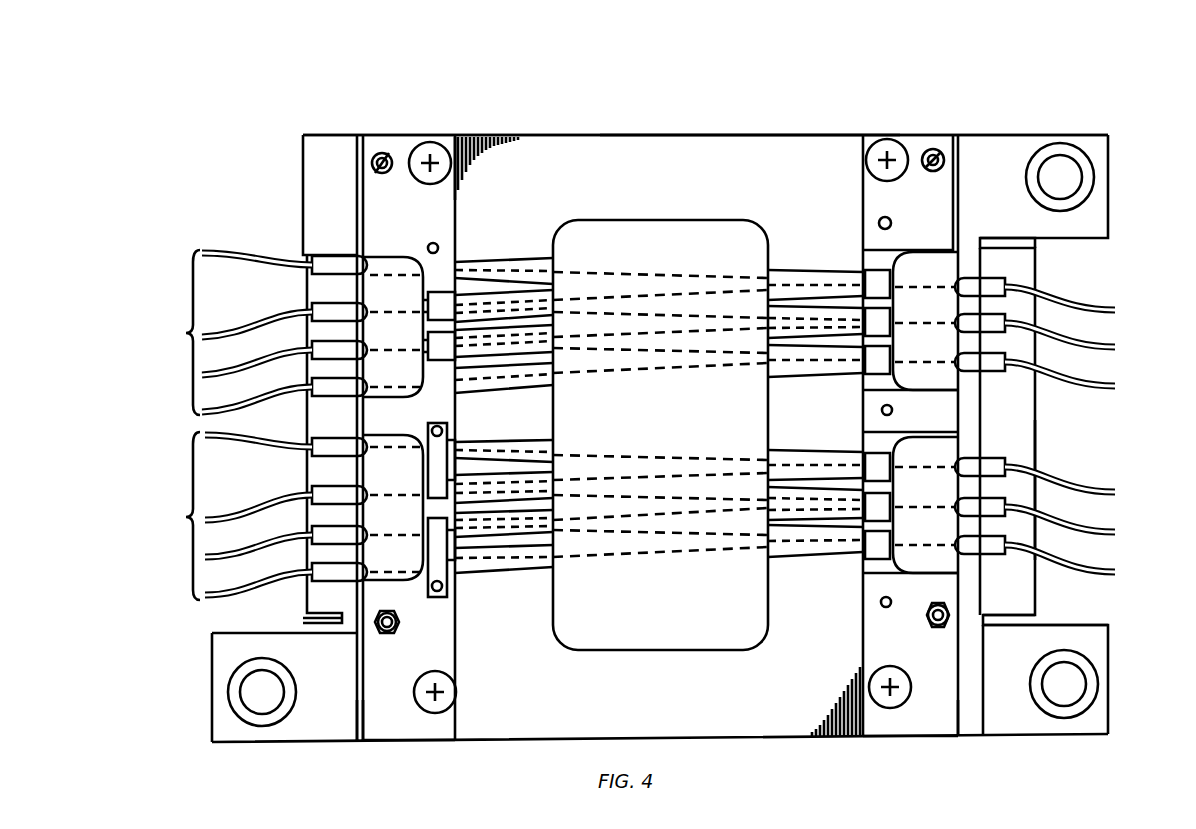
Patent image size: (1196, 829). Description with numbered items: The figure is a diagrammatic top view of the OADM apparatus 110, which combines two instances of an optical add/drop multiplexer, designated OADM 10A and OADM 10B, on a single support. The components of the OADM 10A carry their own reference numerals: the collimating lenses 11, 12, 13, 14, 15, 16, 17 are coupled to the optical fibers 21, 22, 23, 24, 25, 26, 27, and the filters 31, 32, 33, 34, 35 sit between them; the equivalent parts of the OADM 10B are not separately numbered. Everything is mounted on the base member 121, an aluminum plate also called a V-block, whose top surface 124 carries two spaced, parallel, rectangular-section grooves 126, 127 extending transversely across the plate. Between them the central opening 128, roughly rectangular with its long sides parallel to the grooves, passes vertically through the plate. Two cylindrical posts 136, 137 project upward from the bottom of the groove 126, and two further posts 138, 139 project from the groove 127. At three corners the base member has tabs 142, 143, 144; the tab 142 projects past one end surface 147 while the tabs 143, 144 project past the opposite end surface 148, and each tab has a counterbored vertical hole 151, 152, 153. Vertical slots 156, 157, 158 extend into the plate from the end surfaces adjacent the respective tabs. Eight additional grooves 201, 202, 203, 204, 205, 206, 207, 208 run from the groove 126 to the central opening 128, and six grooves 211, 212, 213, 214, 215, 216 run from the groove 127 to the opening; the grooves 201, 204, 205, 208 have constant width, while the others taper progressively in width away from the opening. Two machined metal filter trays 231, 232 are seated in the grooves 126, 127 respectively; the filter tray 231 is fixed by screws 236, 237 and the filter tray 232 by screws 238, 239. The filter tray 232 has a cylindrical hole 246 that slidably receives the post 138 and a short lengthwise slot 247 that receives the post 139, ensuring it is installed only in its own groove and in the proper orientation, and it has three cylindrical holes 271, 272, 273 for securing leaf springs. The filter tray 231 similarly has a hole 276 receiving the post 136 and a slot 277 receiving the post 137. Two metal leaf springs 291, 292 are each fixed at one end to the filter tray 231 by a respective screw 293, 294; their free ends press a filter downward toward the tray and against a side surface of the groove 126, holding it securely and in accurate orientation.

The OADM apparatus 110 is at (715, 40).
The OADM 10A is at (168, 332).
The OADM 10B is at (224, 516).
The collimating lens 11 is at (335, 258).
The collimating lens 12 is at (990, 290).
The collimating lens 13 is at (312, 310).
The collimating lens 14 is at (975, 370).
The collimating lens 15 is at (312, 346).
The collimating lens 16 is at (990, 372).
The collimating lens 17 is at (312, 383).
The optical fiber 21 is at (222, 253).
The optical fiber 22 is at (1100, 300).
The optical fiber 23 is at (232, 330).
The optical fiber 24 is at (1115, 342).
The optical fiber 25 is at (246, 360).
The optical fiber 26 is at (1098, 392).
The optical fiber 27 is at (246, 398).
The filter 31 is at (892, 282).
The filter 32 is at (426, 300).
The filter 33 is at (892, 318).
The filter 34 is at (426, 360).
The filter 35 is at (892, 355).
The base member 121 is at (765, 135).
The top surface 124 is at (545, 140).
The groove 126 is at (360, 742).
The groove 127 is at (960, 735).
The central opening 128 is at (658, 650).
The cylindrical post 136 is at (383, 175).
The cylindrical post 137 is at (396, 620).
The cylindrical post 138 is at (933, 172).
The cylindrical post 139 is at (930, 615).
The tab 142 is at (212, 660).
The tab 143 is at (1108, 650).
The tab 144 is at (1108, 222).
The end surface 147 is at (303, 160).
The end surface 148 is at (1035, 470).
The hole 151 is at (245, 690).
The hole 152 is at (1070, 700).
The hole 153 is at (1080, 170).
The vertical slot 156 is at (305, 623).
The vertical slot 157 is at (1030, 617).
The vertical slot 158 is at (1030, 245).
The groove 201 is at (532, 262).
The groove 202 is at (482, 268).
The groove 203 is at (553, 360).
The groove 204 is at (548, 382).
The groove 205 is at (555, 455).
The groove 206 is at (553, 480).
The groove 207 is at (510, 545).
The groove 208 is at (556, 565).
The groove 211 is at (766, 280).
The groove 212 is at (795, 300).
The groove 213 is at (766, 372).
The groove 214 is at (800, 460).
The groove 215 is at (830, 485).
The groove 216 is at (766, 550).
The filter tray 231 is at (430, 741).
The filter tray 232 is at (900, 736).
The screw 236 is at (432, 140).
The screw 237 is at (456, 685).
The screw 238 is at (885, 140).
The screw 239 is at (870, 680).
The cylindrical hole 246 is at (935, 150).
The slot 247 is at (936, 628).
The cylindrical hole 271 is at (880, 222).
The cylindrical hole 272 is at (892, 410).
The cylindrical hole 273 is at (880, 604).
The cylindrical hole 276 is at (378, 152).
The slot 277 is at (385, 635).
The leaf spring 291 is at (425, 475).
The leaf spring 292 is at (425, 545).
The screw 293 is at (442, 430).
The screw 294 is at (442, 592).